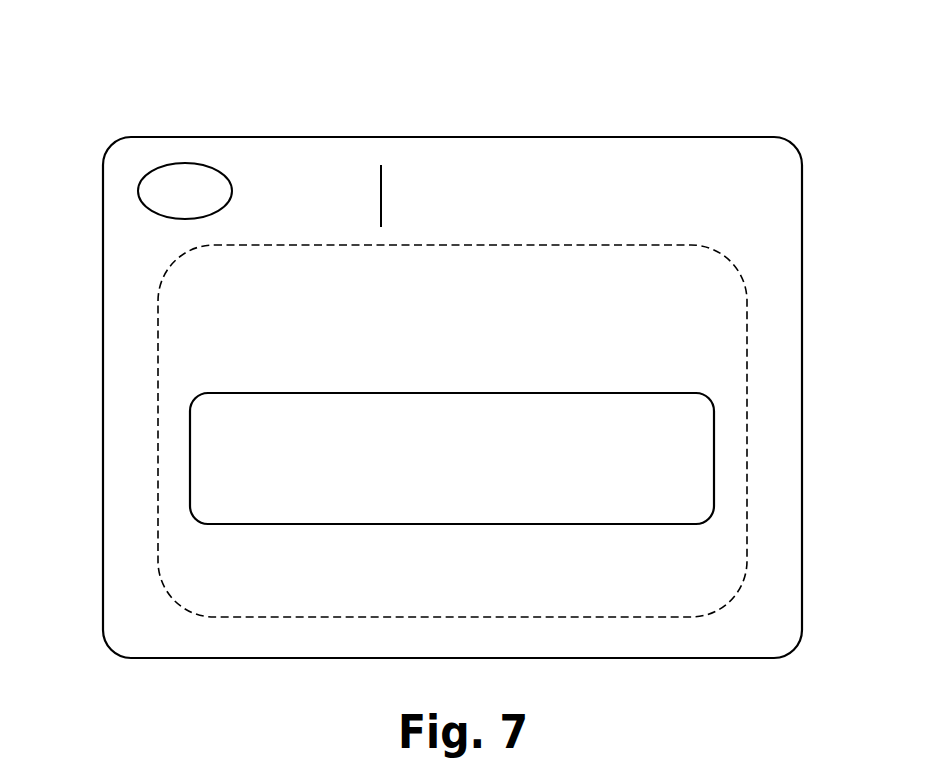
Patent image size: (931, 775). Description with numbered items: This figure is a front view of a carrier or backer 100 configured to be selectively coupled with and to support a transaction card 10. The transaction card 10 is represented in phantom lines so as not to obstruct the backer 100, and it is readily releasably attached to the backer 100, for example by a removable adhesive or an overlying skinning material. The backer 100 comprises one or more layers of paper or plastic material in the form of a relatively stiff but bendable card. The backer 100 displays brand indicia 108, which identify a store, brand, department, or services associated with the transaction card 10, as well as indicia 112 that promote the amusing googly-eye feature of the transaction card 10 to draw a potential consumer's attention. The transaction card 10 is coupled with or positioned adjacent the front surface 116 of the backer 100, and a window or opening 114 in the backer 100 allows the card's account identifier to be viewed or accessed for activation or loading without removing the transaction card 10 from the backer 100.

The backer 100 is at (129, 73).
The transaction card 10 is at (747, 360).
The brand indicia 108 is at (180, 174).
The indicia 112 is at (464, 190).
The window or opening 114 is at (190, 455).
The front surface 116 is at (773, 470).